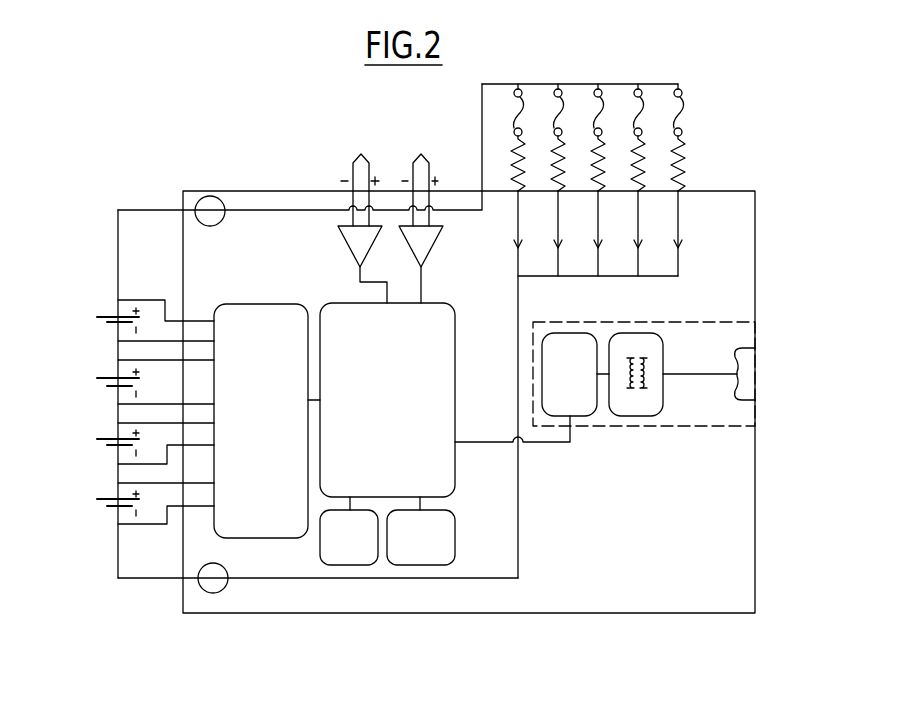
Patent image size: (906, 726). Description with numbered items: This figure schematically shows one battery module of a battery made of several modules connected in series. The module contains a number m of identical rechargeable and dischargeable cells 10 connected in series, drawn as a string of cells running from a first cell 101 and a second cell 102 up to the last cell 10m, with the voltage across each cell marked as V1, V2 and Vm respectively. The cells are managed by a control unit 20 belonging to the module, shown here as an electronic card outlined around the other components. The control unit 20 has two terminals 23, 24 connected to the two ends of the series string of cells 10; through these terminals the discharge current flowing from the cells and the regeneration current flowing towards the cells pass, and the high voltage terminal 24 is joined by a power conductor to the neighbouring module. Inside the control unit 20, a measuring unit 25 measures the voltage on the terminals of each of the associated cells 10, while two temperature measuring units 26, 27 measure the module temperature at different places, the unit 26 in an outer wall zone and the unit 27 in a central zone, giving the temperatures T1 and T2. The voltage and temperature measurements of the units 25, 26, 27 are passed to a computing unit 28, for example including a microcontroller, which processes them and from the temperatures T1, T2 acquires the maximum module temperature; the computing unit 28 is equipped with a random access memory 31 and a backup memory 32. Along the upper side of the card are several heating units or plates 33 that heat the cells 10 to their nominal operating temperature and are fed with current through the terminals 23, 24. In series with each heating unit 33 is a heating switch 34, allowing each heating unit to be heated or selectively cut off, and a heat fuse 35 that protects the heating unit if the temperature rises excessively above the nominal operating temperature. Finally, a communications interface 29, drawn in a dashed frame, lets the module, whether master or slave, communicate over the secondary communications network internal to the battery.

The cell 10 is at (100, 380).
The cell m 10m is at (100, 319).
The cell 1 101 is at (100, 500).
The cell 2 102 is at (100, 443).
The control unit 20 is at (233, 619).
The terminal 23 is at (200, 586).
The high voltage terminal 24 is at (208, 197).
The voltage measuring unit 25 is at (261, 421).
The temperature measuring unit 26 is at (345, 243).
The temperature measuring unit 27 is at (440, 238).
The computing unit 28 is at (387, 400).
The communications interface 29 is at (722, 321).
The random access memory 31 is at (349, 537).
The backup memory 32 is at (421, 537).
The heating unit 33 is at (686, 164).
The heating switch 34 is at (681, 250).
The heat fuse 35 is at (690, 93).
The temperature T1 is at (360, 177).
The temperature T2 is at (420, 177).
The cell voltage 1 V1 is at (152, 520).
The cell voltage 2 V2 is at (152, 461).
The cell voltage m Vm is at (150, 342).